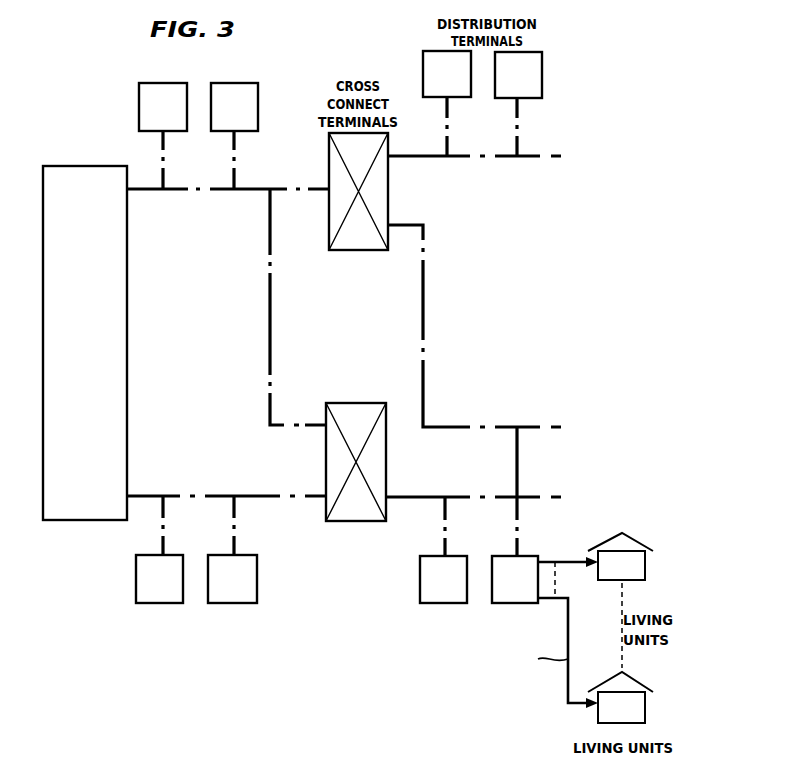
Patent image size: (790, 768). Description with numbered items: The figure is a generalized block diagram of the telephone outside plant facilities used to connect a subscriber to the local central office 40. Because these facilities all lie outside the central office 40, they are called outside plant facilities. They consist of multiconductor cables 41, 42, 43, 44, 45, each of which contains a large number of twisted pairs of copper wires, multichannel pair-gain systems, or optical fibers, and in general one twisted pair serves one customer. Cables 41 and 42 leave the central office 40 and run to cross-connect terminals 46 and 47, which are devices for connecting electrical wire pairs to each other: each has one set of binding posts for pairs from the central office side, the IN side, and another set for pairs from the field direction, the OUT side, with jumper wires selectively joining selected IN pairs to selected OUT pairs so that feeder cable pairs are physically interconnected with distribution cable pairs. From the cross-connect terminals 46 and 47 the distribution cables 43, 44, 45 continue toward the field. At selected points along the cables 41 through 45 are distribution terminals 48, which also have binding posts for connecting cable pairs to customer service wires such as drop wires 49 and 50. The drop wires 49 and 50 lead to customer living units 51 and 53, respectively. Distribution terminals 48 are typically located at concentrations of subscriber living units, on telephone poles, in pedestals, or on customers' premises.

The central office 40 is at (92, 520).
The cable 41 is at (175, 192).
The cable 42 is at (145, 496).
The cable 43 is at (508, 158).
The cable 44 is at (532, 427).
The cable 45 is at (532, 497).
The cross-connect terminal 46 is at (358, 250).
The cross-connect terminal 47 is at (355, 521).
The distribution terminals 48 is at (183, 112).
The drop wire 49 is at (568, 690).
The drop wire 50 is at (563, 562).
The customer living unit 51 is at (645, 705).
The customer living unit 53 is at (645, 565).